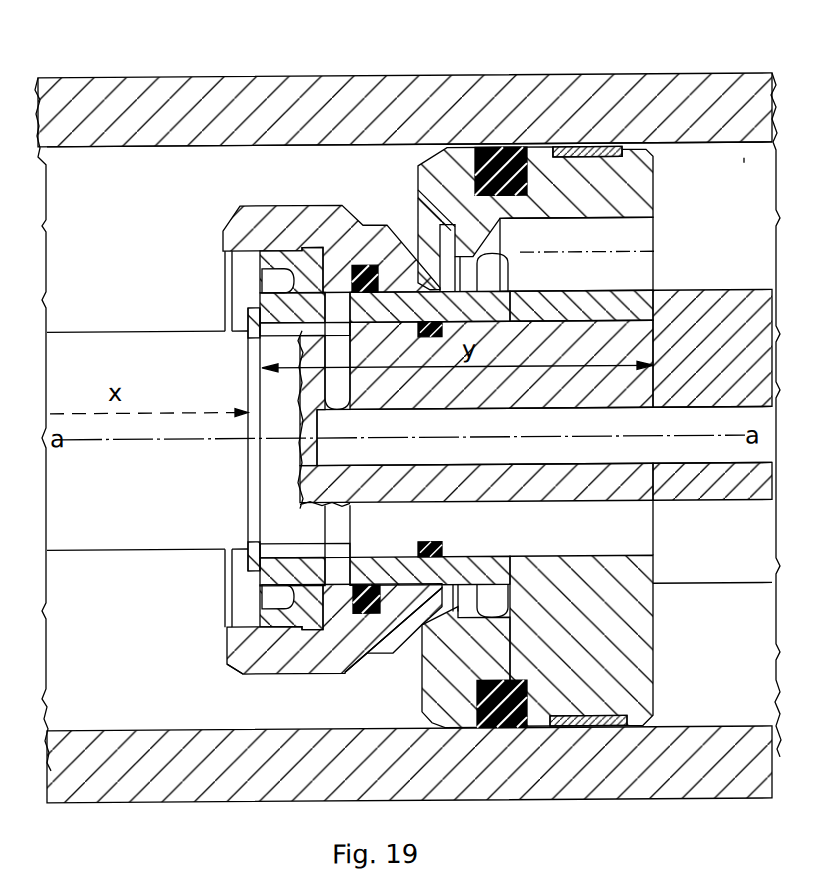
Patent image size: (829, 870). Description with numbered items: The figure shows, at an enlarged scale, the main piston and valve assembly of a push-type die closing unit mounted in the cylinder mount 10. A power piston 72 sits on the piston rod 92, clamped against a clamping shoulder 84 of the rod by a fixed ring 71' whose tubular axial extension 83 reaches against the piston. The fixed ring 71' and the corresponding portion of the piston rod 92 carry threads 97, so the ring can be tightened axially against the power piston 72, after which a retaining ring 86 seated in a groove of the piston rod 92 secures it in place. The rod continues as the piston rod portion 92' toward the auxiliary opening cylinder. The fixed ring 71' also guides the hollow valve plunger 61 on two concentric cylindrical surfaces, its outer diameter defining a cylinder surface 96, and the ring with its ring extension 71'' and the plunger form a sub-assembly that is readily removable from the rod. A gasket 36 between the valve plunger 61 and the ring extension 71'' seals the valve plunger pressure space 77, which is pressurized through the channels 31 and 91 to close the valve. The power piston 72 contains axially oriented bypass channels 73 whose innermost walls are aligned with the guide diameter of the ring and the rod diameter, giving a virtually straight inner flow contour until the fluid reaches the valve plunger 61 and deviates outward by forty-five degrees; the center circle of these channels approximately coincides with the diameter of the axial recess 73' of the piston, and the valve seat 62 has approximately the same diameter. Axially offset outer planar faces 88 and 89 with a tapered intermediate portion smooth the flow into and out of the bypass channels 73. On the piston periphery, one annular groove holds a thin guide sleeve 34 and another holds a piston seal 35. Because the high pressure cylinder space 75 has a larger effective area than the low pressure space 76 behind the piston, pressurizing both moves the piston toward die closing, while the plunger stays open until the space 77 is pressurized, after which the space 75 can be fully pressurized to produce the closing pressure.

The cylinder mount 10 is at (113, 100).
The high pressure cylinder space 75 is at (198, 175).
The piston seal 35 is at (499, 178).
The guide sleeve 34 is at (573, 155).
The low pressure space 76 is at (744, 165).
The cylinder surface 96 is at (290, 245).
The valve seat 62 is at (457, 255).
The power piston 72 is at (597, 190).
The bypass channels 73 is at (608, 242).
The clamping shoulder 84 is at (647, 302).
The piston rod 92 is at (712, 377).
The piston rod portion 92' is at (136, 411).
The threads 97 is at (268, 328).
The channel 91 is at (337, 380).
The channel 31 is at (330, 453).
The valve plunger pressure space 77 is at (330, 580).
The gasket 36 is at (368, 582).
The tubular axial extension 83 is at (497, 568).
The axial recess 73' is at (635, 612).
The retaining ring 86 is at (247, 568).
The fixed ring 71' is at (214, 669).
The valve plunger 61 is at (273, 657).
The ring extension 71'' is at (365, 654).
The outer planar face 88 is at (440, 637).
The outer planar face 89 is at (422, 698).